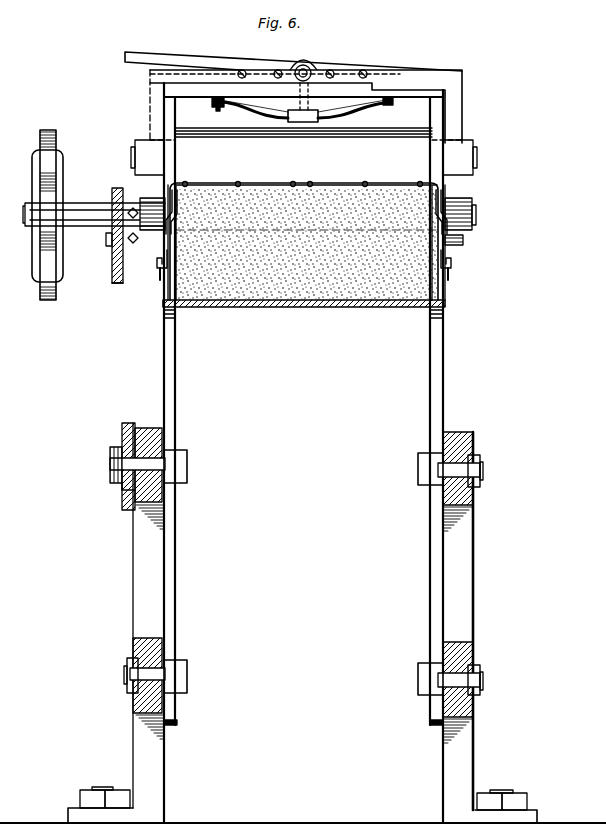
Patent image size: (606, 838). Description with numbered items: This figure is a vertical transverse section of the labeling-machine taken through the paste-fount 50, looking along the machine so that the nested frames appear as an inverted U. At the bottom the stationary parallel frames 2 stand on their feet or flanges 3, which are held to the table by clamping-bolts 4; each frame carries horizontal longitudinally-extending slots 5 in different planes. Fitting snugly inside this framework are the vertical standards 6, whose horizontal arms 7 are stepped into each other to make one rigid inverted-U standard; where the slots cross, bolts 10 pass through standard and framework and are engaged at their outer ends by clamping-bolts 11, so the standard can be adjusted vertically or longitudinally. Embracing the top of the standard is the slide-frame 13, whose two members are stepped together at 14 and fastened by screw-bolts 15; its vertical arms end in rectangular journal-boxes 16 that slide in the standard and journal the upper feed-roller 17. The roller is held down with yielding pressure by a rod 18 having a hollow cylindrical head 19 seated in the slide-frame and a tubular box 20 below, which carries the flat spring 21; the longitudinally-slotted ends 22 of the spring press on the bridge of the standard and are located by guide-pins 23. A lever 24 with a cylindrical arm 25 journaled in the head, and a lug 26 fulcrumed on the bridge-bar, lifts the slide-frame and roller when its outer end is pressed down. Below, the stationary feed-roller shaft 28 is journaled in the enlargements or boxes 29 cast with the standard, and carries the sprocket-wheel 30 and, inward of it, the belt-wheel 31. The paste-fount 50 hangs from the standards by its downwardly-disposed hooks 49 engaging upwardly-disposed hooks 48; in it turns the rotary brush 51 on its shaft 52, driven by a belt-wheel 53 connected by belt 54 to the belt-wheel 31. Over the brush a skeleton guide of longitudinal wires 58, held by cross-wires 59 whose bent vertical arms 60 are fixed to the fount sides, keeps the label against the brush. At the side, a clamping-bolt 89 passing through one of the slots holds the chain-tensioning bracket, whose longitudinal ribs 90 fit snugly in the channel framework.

The parallel frames 2 is at (301, 616).
The feet or flanges 3 is at (68, 812).
The clamping-bolts 4 is at (97, 788).
The horizontal longitudinally-extending slots 5 is at (148, 430).
The vertical standards 6 is at (168, 577).
The horizontal arms 7 is at (193, 88).
The bolts 10 is at (187, 467).
The clamping-bolts 11 is at (481, 480).
The slide-frame 13 is at (150, 85).
The stepped joint 14 is at (243, 70).
The screw-bolts 15 is at (362, 72).
The rectangular journal-boxes 16 is at (304, 157).
The upper feed-roller 17 is at (306, 149).
The rod 18 is at (262, 112).
The hollow cylindrical head 19 is at (308, 70).
The tubular box 20 is at (303, 122).
The flat spring 21 is at (358, 104).
The longitudinally-slotted ends 22 is at (213, 105).
The guide-pins 23 is at (218, 110).
The lever 24 is at (170, 56).
The cylindrical arm 25 is at (306, 60).
The lug 26 is at (299, 63).
The shaft 28 is at (105, 213).
The enlargements or boxes 29 is at (308, 214).
The sprocket-wheel 30 is at (58, 165).
The belt-wheel 31 is at (117, 190).
The upwardly-disposed hooks 48 is at (160, 264).
The downwardly-disposed hooks 49 is at (163, 275).
The paste-fount 50 is at (304, 314).
The rotary brush 51 is at (306, 244).
The brush shaft 52 is at (463, 246).
The belt-wheel 53 is at (112, 279).
The belt 54 is at (108, 253).
The longitudinal wires 58 is at (238, 188).
The cross-wires 59 is at (343, 186).
The vertical arms 60 is at (165, 192).
The clamping-bolt 89 is at (110, 462).
The longitudinal ribs 90 is at (124, 490).